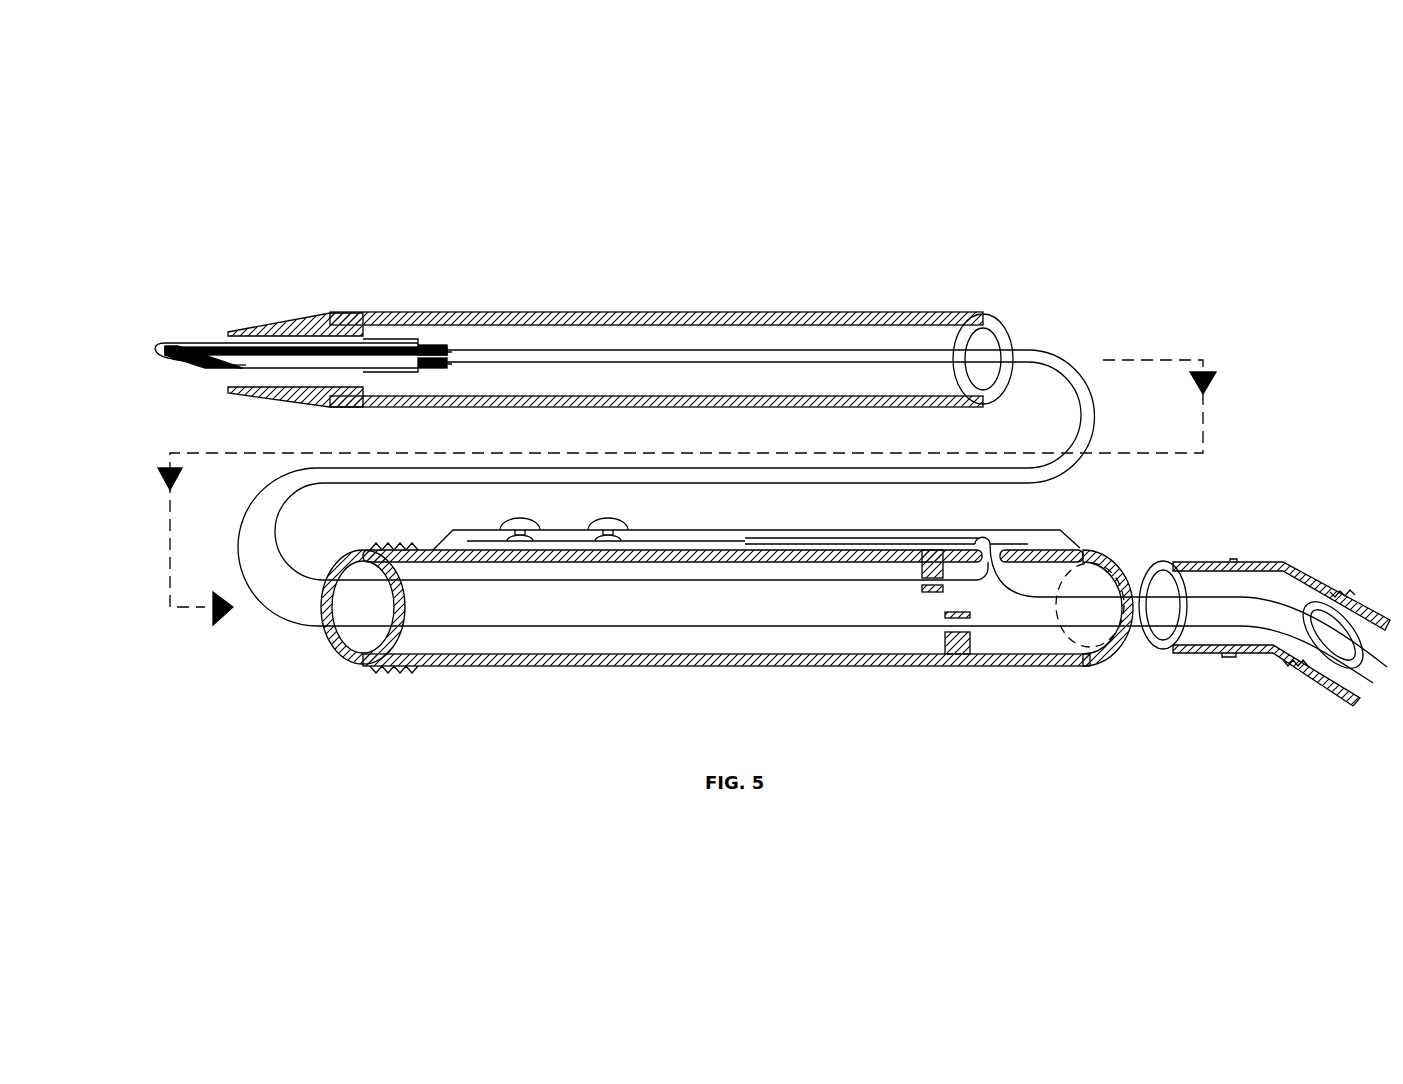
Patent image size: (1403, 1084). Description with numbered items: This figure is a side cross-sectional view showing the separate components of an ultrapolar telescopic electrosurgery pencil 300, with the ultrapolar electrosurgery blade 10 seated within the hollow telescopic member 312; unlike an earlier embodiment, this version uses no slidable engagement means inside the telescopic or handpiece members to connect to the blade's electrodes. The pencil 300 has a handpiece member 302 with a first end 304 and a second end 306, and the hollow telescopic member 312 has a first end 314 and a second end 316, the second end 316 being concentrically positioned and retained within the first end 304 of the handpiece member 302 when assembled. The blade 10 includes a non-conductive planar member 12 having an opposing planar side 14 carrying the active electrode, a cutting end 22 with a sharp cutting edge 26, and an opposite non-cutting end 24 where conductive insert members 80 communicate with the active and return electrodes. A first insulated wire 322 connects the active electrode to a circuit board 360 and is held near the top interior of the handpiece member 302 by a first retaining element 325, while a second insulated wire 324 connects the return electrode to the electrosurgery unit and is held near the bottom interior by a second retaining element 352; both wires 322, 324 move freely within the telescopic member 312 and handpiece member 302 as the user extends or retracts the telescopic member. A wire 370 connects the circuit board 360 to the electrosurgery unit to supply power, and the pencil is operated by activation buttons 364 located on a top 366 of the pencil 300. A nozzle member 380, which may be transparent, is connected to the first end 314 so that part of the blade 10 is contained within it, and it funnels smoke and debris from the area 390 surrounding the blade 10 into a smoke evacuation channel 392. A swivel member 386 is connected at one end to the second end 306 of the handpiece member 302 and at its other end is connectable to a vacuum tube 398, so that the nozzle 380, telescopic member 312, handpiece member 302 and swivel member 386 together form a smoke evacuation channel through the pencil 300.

The ultrapolar telescopic electrosurgery pencil 300 is at (668, 254).
The ultrapolar electrosurgery blade 10 is at (157, 338).
The non-conductive planar member 12 is at (210, 366).
The opposing planar side 14 is at (240, 357).
The cutting end 22 is at (150, 358).
The non-cutting end 24 is at (449, 352).
The sharp cutting edge 26 is at (175, 375).
The conductive insert members 80 is at (426, 345).
The handpiece member 302 is at (760, 667).
The first end of handpiece member 304 is at (338, 648).
The second end of handpiece member 306 is at (1120, 646).
The hollow telescopic member 312 is at (552, 312).
The first end of hollow telescopic member 314 is at (331, 404).
The second end of hollow telescopic member 316 is at (993, 336).
The first insulated wire 322 is at (763, 348).
The second insulated wire 324 is at (627, 365).
The first retaining element 325 is at (932, 582).
The second retaining element 352 is at (955, 650).
The circuit board 360 is at (688, 545).
The activation buttons 364 is at (610, 518).
The top of electrosurgery pencil 366 is at (793, 530).
The wire 370 is at (1080, 598).
The nozzle member 380 is at (277, 330).
The swivel member 386 is at (1200, 562).
The area within nozzle surrounding blade 390 is at (280, 377).
The smoke evacuation channel 392 is at (760, 378).
The vacuum tube 398 is at (1310, 680).